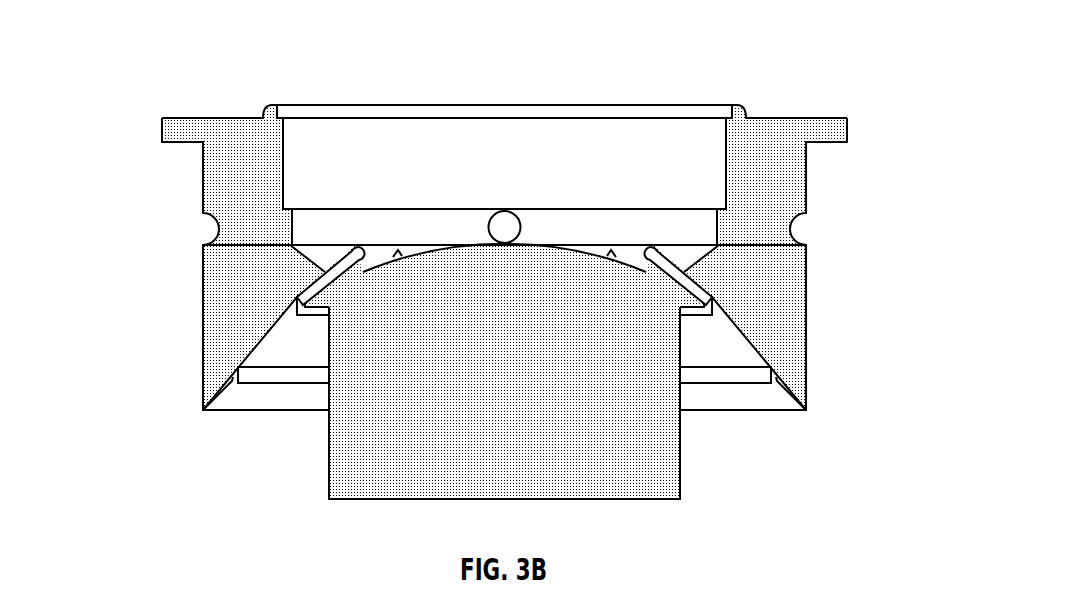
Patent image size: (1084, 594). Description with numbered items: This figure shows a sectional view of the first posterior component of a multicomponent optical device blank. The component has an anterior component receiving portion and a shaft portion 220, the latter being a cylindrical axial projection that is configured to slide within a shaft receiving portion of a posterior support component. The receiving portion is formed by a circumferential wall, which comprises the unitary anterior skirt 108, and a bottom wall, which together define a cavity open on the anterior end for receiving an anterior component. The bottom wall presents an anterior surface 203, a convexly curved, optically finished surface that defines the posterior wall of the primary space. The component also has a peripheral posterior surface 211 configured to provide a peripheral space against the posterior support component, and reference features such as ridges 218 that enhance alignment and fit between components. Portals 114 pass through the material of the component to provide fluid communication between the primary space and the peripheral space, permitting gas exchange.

The anterior skirt 108 is at (773, 318).
The portal 114 is at (323, 285).
The anterior surface 203 is at (592, 243).
The peripheral posterior surface 211 is at (278, 345).
The ridge 218 is at (747, 385).
The shaft portion 220 is at (508, 432).